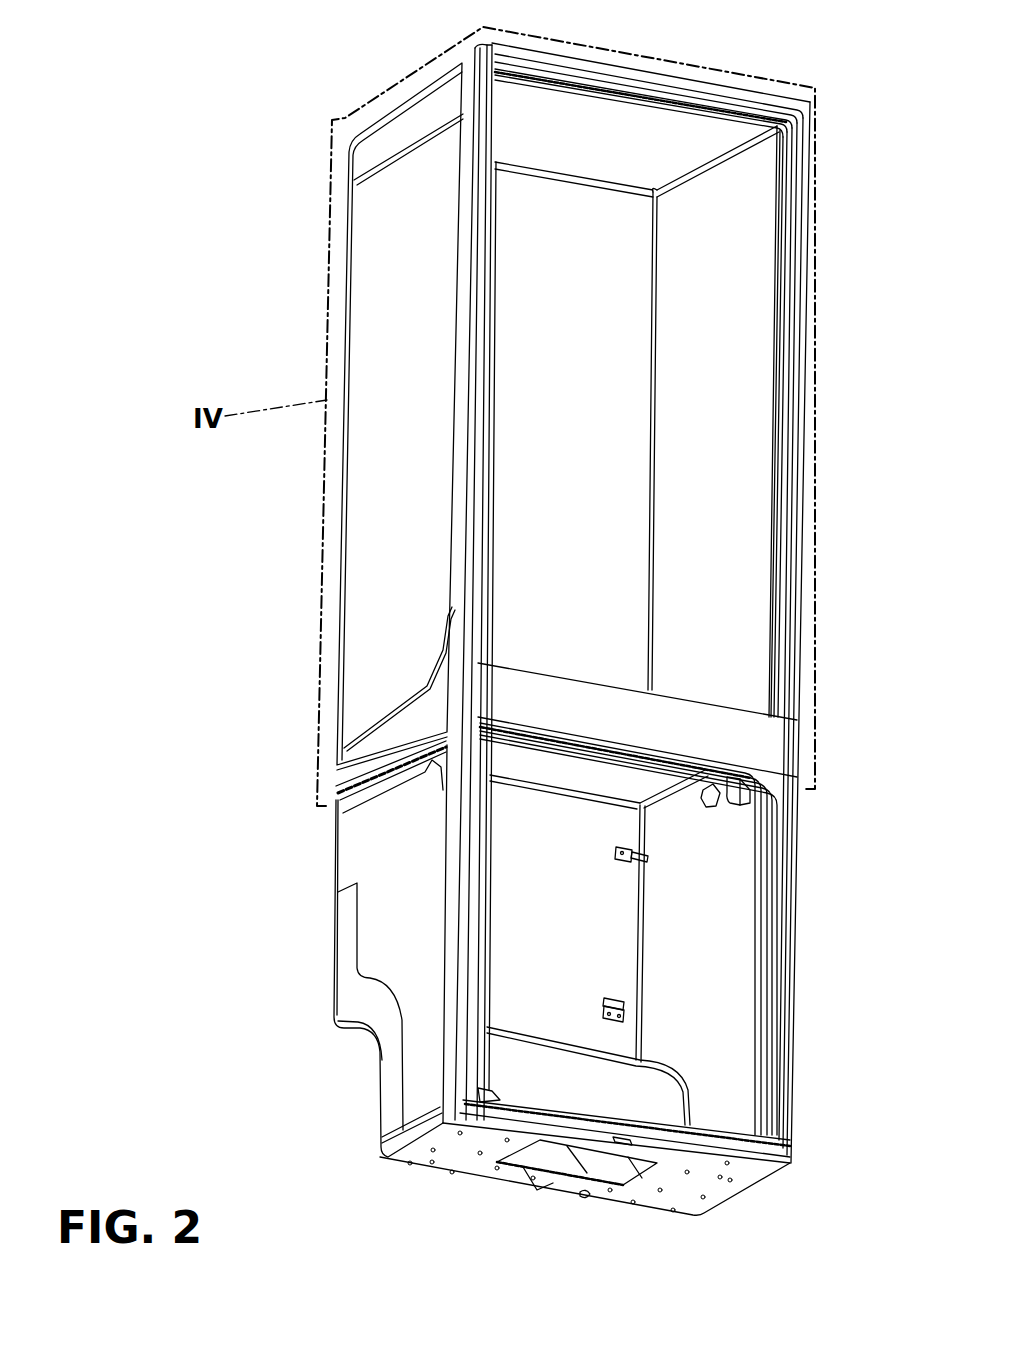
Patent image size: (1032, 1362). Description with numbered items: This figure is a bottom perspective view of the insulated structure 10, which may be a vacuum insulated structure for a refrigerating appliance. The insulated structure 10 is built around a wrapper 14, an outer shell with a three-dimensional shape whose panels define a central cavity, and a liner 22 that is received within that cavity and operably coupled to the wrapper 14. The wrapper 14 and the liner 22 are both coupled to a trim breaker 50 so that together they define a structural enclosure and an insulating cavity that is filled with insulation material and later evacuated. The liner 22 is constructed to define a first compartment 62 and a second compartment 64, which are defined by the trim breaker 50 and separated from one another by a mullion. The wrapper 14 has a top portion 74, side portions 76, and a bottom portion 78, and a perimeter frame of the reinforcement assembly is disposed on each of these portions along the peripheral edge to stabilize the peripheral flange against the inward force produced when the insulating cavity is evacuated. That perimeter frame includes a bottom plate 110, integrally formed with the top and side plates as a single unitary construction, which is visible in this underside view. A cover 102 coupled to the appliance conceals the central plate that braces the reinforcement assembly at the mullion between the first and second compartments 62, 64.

The insulated structure 10 is at (203, 157).
The wrapper 14 is at (350, 393).
The liner 22 is at (748, 193).
The trim breaker 50 is at (653, 72).
The first compartment 62 is at (720, 363).
The second compartment 64 is at (703, 902).
The top portion 74 is at (400, 100).
The side portions 76 is at (388, 360).
The bottom portion 78 is at (593, 1165).
The cover 102 is at (742, 742).
The bottom plate 110 is at (520, 1130).